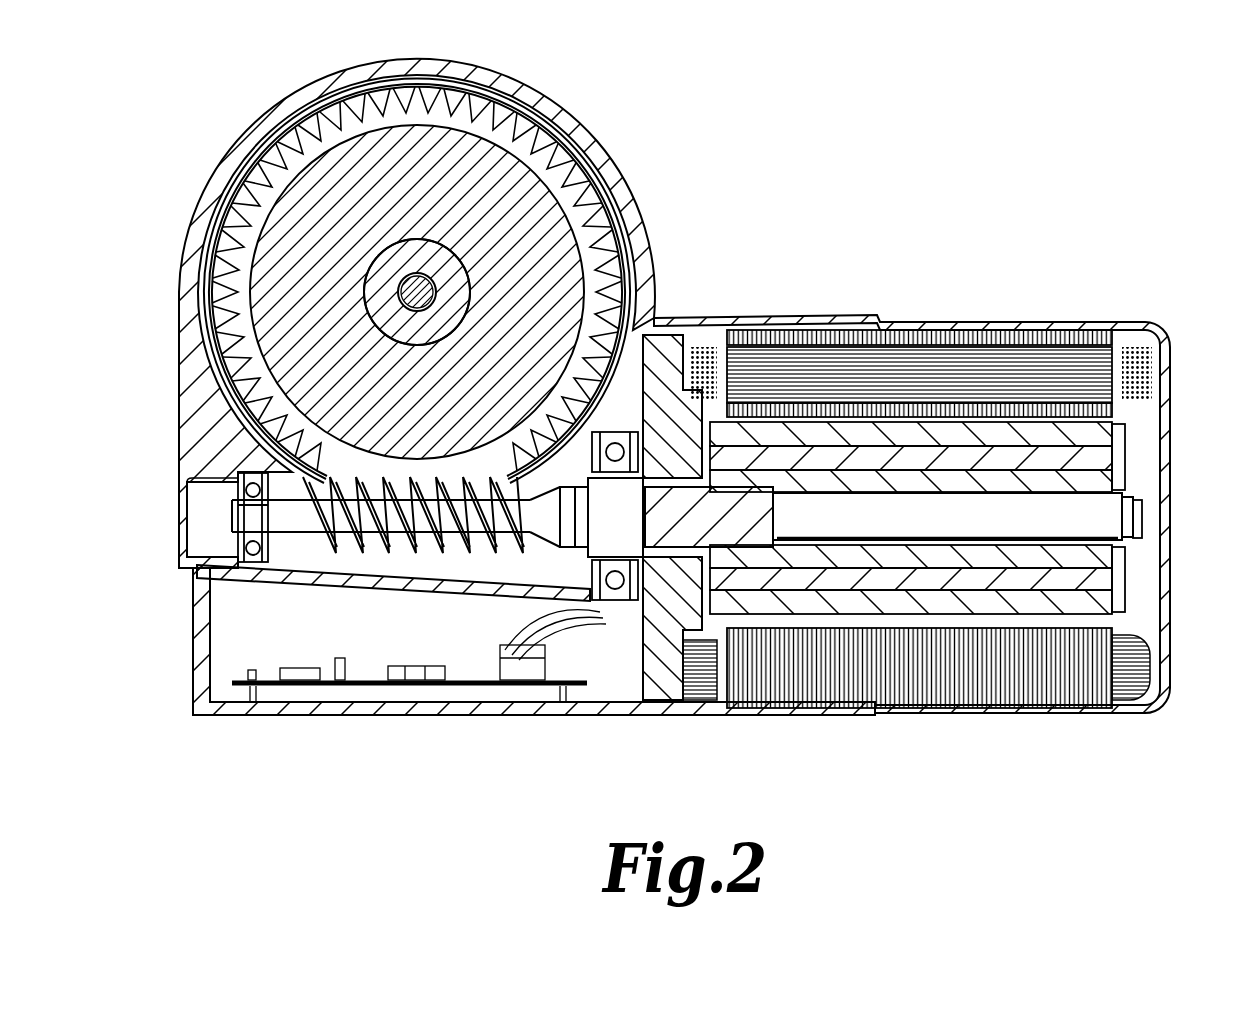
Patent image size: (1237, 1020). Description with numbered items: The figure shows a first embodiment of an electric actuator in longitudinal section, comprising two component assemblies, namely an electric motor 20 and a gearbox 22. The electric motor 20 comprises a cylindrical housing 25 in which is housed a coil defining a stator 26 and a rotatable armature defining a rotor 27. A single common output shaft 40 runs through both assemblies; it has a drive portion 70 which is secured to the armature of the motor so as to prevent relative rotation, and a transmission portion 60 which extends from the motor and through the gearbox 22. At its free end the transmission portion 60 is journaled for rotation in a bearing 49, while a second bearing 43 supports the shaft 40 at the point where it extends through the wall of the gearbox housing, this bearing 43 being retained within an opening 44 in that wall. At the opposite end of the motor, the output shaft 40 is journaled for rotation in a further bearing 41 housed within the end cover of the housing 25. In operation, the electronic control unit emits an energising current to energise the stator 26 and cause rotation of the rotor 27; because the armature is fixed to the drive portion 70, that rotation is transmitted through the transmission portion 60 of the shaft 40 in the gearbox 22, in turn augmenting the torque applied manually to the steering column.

The electric motor 20 is at (967, 320).
The gearbox 22 is at (636, 236).
The cylindrical housing 25 is at (1073, 325).
The stator 26 is at (1143, 353).
The rotor 27 is at (1100, 445).
The output shaft 40 is at (810, 527).
The bearing 41 is at (1130, 548).
The bearing 43 is at (615, 587).
The opening 44 is at (610, 613).
The bearing 49 is at (233, 575).
The transmission portion 60 is at (530, 513).
The drive portion 70 is at (928, 523).